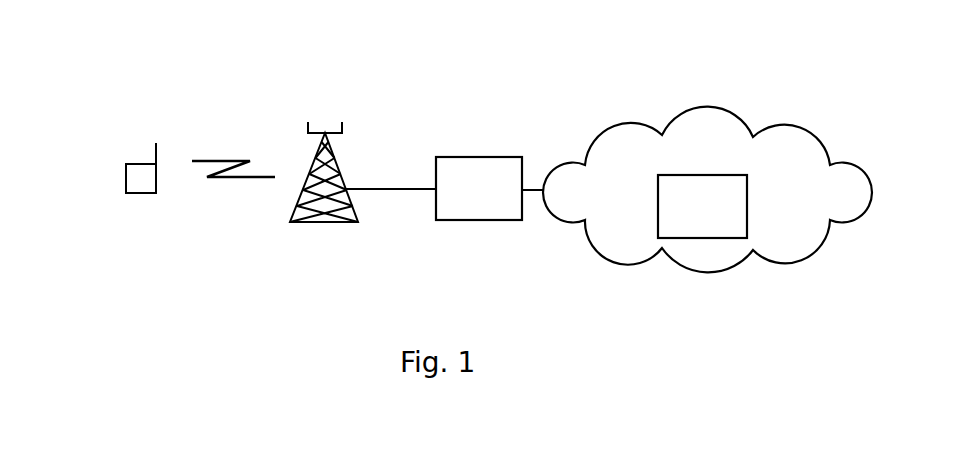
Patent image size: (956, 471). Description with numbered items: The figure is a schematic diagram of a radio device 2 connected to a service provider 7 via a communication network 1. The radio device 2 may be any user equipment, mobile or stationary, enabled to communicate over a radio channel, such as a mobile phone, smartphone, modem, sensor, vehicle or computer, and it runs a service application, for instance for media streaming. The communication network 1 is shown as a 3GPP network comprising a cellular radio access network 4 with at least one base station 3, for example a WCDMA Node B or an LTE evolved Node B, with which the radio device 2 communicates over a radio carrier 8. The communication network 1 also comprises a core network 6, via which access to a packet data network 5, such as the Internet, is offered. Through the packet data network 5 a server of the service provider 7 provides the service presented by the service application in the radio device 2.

The communication network 1 is at (334, 87).
The radio device 2 is at (136, 178).
The base station 3 is at (340, 165).
The radio access network 4 is at (306, 242).
The packet data network 5 is at (707, 190).
The core network 6 is at (489, 188).
The service provider 7 is at (702, 206).
The radio carrier 8 is at (212, 160).